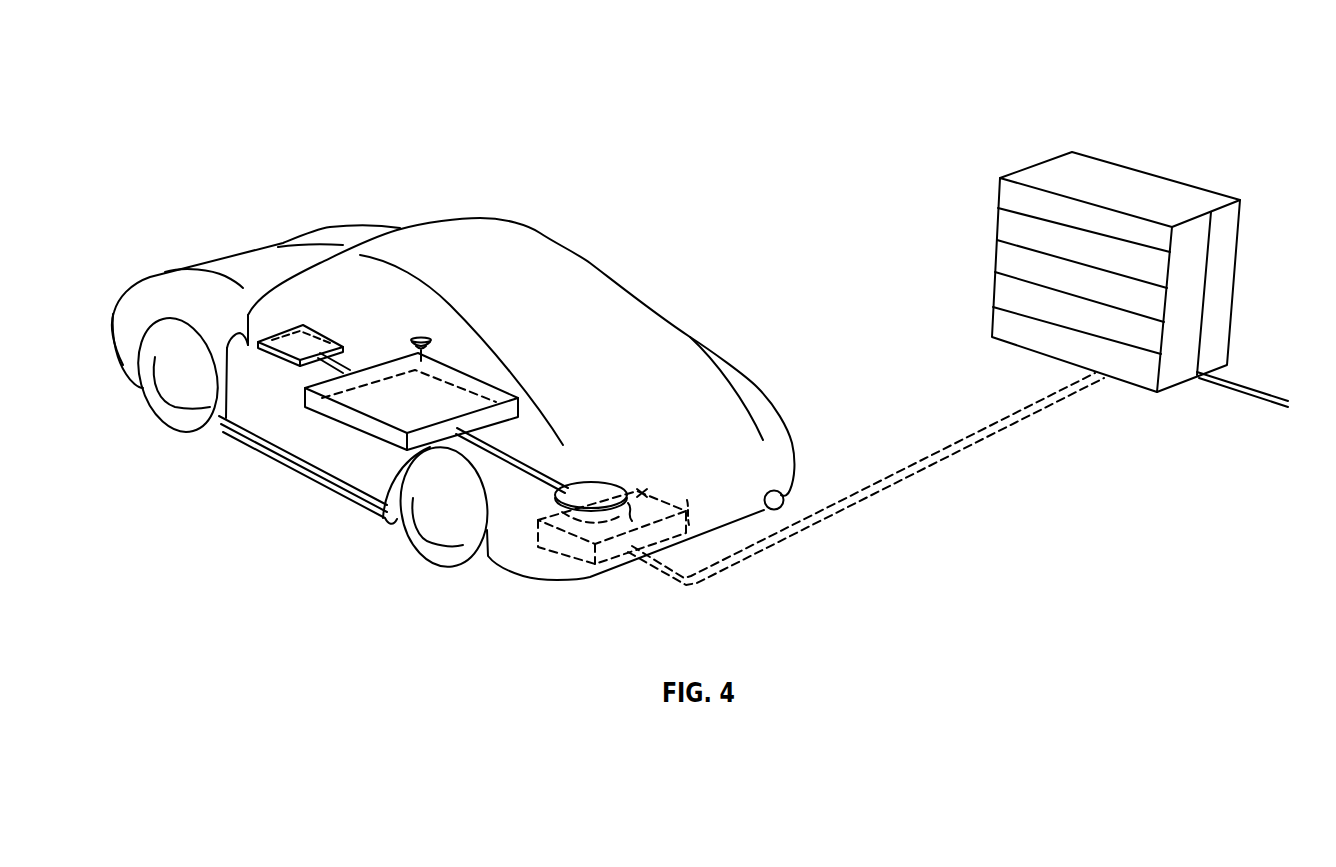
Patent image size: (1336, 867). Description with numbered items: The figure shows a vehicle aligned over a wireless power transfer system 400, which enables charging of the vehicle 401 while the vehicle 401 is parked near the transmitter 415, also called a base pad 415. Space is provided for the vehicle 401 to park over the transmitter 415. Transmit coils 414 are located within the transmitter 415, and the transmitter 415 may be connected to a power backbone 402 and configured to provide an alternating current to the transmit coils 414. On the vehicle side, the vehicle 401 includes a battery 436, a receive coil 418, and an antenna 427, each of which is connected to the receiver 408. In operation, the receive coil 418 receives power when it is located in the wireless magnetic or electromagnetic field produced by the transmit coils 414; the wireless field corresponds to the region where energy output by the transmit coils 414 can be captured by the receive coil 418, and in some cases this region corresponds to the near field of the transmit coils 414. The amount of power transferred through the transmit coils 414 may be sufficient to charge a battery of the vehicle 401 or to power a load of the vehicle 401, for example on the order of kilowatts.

The wireless power transfer system 400 is at (440, 72).
The vehicle 401 is at (237, 255).
The power backbone 402 is at (877, 493).
The receiver 408 is at (313, 386).
The transmit coils 414 is at (665, 473).
The transmitter 415 is at (725, 471).
The receive coil 418 is at (594, 488).
The antenna 427 is at (421, 339).
The battery 436 is at (322, 328).